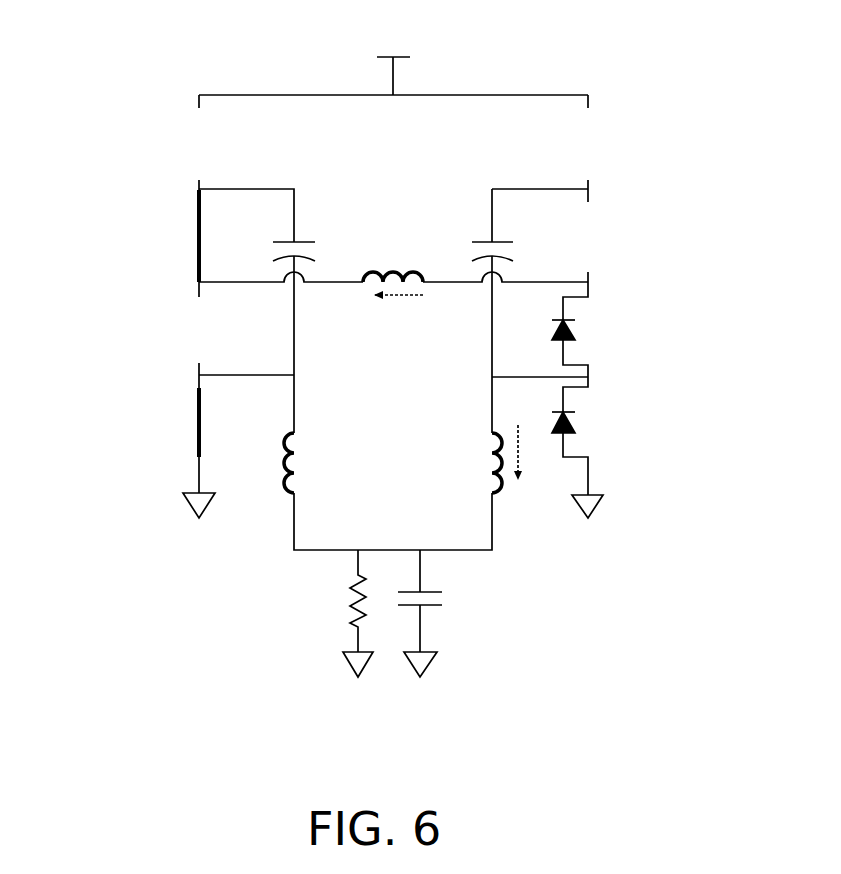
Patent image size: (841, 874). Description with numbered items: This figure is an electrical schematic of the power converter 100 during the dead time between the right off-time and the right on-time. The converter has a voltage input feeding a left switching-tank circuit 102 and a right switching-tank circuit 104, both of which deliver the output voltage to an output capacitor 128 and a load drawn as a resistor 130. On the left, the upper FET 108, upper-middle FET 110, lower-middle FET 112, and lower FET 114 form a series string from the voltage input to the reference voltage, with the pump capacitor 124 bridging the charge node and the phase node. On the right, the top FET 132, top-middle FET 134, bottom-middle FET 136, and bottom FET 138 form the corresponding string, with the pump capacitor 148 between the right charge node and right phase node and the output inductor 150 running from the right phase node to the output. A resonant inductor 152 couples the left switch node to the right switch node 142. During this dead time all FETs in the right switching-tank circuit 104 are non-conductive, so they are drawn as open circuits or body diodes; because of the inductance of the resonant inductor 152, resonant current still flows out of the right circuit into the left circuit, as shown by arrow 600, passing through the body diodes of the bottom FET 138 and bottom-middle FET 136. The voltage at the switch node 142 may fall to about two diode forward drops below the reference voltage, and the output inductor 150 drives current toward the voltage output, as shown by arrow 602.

The power converter 100 is at (126, 80).
The upper FET 108 is at (193, 142).
The top FET 132 is at (594, 143).
The upper-middle FET 110 is at (195, 233).
The top-middle FET 134 is at (594, 233).
The lower-middle FET 112 is at (191, 328).
The switch node 142 is at (594, 282).
The pump capacitor 124 is at (307, 229).
The pump capacitor 148 is at (480, 230).
The resonant inductor 152 is at (383, 258).
The output inductor 150 is at (481, 465).
The lower FET 114 is at (191, 423).
The bottom-middle FET 136 is at (590, 335).
The bottom FET 138 is at (595, 423).
The left switching-tank circuit 102 is at (252, 538).
The right switching-tank circuit 104 is at (541, 540).
The output capacitor 128 is at (450, 594).
The resistor 130 is at (340, 590).
The arrow 600 is at (379, 298).
The arrow 602 is at (520, 452).